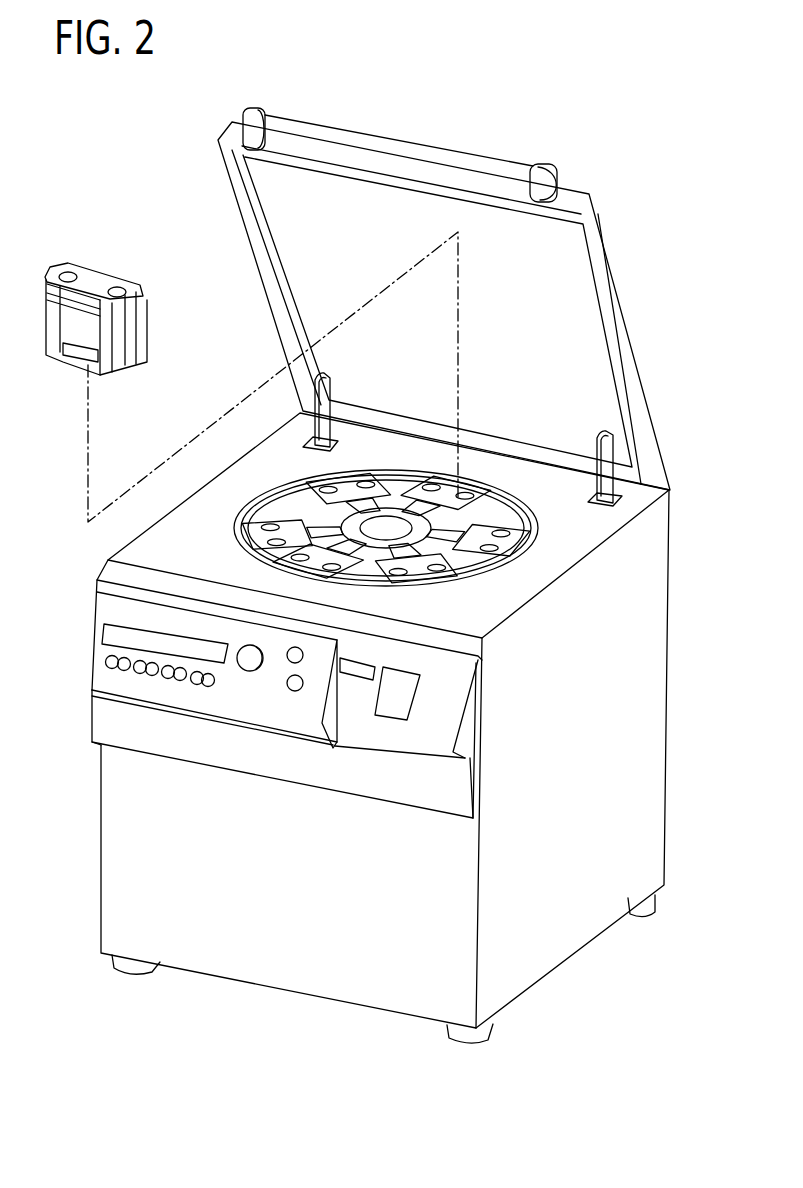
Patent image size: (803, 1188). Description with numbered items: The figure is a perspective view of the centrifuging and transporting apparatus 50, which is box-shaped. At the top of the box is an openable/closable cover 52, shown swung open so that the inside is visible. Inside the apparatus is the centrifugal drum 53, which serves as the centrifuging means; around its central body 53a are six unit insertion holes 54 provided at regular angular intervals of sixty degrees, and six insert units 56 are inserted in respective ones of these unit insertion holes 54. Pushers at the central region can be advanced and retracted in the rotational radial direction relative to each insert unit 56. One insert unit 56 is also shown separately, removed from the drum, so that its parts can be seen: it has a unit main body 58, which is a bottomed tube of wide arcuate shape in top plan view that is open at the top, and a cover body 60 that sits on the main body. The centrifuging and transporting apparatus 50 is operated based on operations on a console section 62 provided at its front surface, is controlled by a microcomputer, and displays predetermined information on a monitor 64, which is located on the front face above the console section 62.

The centrifuging and transporting apparatus 50 is at (636, 114).
The openable/closable cover 52 is at (641, 369).
The centrifugal drum 53 is at (535, 528).
The central body 53a is at (418, 510).
The unit insertion holes 54 is at (490, 500).
The insert unit 56 is at (88, 246).
The unit main body 58 is at (102, 364).
The cover body 60 is at (100, 282).
The console section 62 is at (235, 762).
The monitor 64 is at (123, 632).